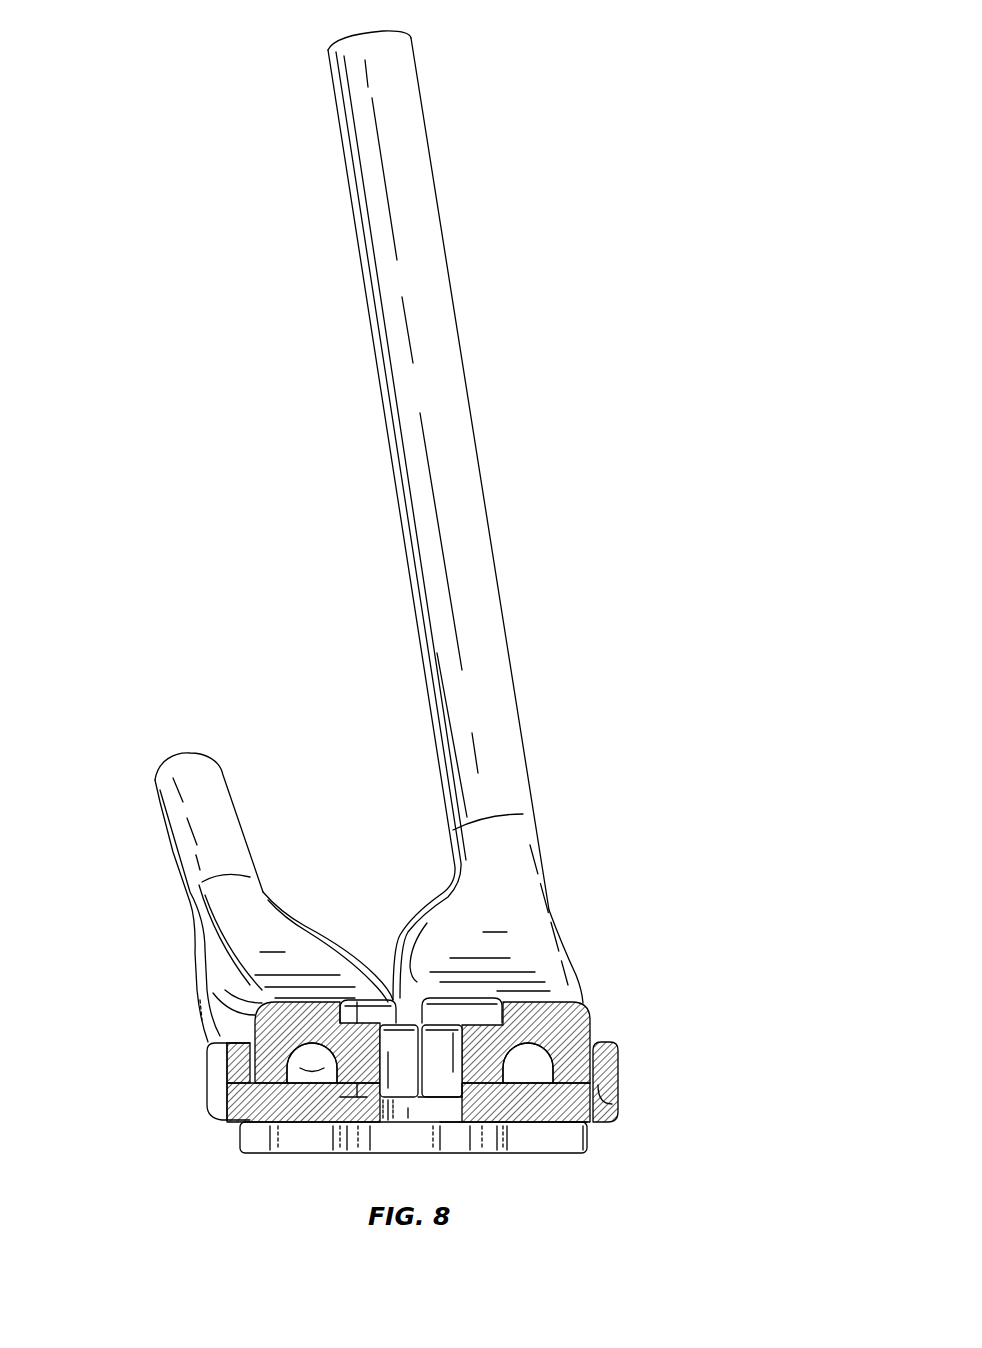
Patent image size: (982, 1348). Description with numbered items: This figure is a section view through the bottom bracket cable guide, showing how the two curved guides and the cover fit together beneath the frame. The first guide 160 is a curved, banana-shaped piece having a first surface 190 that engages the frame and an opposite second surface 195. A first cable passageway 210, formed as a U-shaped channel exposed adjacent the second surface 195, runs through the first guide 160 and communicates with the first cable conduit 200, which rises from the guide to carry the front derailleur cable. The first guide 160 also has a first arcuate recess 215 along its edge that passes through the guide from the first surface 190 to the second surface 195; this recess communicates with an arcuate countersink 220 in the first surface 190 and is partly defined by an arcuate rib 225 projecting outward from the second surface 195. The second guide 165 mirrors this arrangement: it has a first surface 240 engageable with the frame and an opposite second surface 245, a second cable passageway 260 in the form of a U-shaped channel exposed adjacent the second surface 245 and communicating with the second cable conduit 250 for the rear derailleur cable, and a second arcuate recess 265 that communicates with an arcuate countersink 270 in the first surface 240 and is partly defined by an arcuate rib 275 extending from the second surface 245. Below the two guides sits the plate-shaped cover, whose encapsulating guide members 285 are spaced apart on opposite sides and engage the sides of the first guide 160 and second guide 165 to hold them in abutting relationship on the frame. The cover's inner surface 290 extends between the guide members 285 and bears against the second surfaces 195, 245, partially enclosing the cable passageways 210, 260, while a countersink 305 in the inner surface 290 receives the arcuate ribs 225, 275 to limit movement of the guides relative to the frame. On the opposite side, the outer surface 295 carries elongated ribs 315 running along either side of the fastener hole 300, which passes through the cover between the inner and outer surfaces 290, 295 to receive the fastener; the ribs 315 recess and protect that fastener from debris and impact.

The first cable conduit 200 is at (428, 222).
The first surface 190 is at (540, 933).
The first guide 160 is at (571, 1085).
The second cable conduit 250 is at (170, 785).
The second guide 165 is at (195, 992).
The first surface 240 is at (238, 1011).
The arcuate countersink 270 is at (357, 1027).
The second arcuate recess 265 is at (400, 1025).
The arcuate countersink 220 is at (470, 1025).
The arcuate rib 225 is at (472, 1093).
The guide members 285 is at (235, 1057).
The inner surface 290 is at (260, 1065).
The second surface 245 is at (265, 1122).
The second cable passageway 260 is at (303, 1068).
The arcuate rib 275 is at (368, 1092).
The first arcuate recess 215 is at (460, 1073).
The second surface 195 is at (573, 1103).
The elongated ribs 315 is at (580, 1137).
The outer surface 295 is at (566, 1123).
The first cable passageway 210 is at (533, 1082).
The fastener hole 300 is at (450, 1123).
The countersink 305 is at (497, 1123).